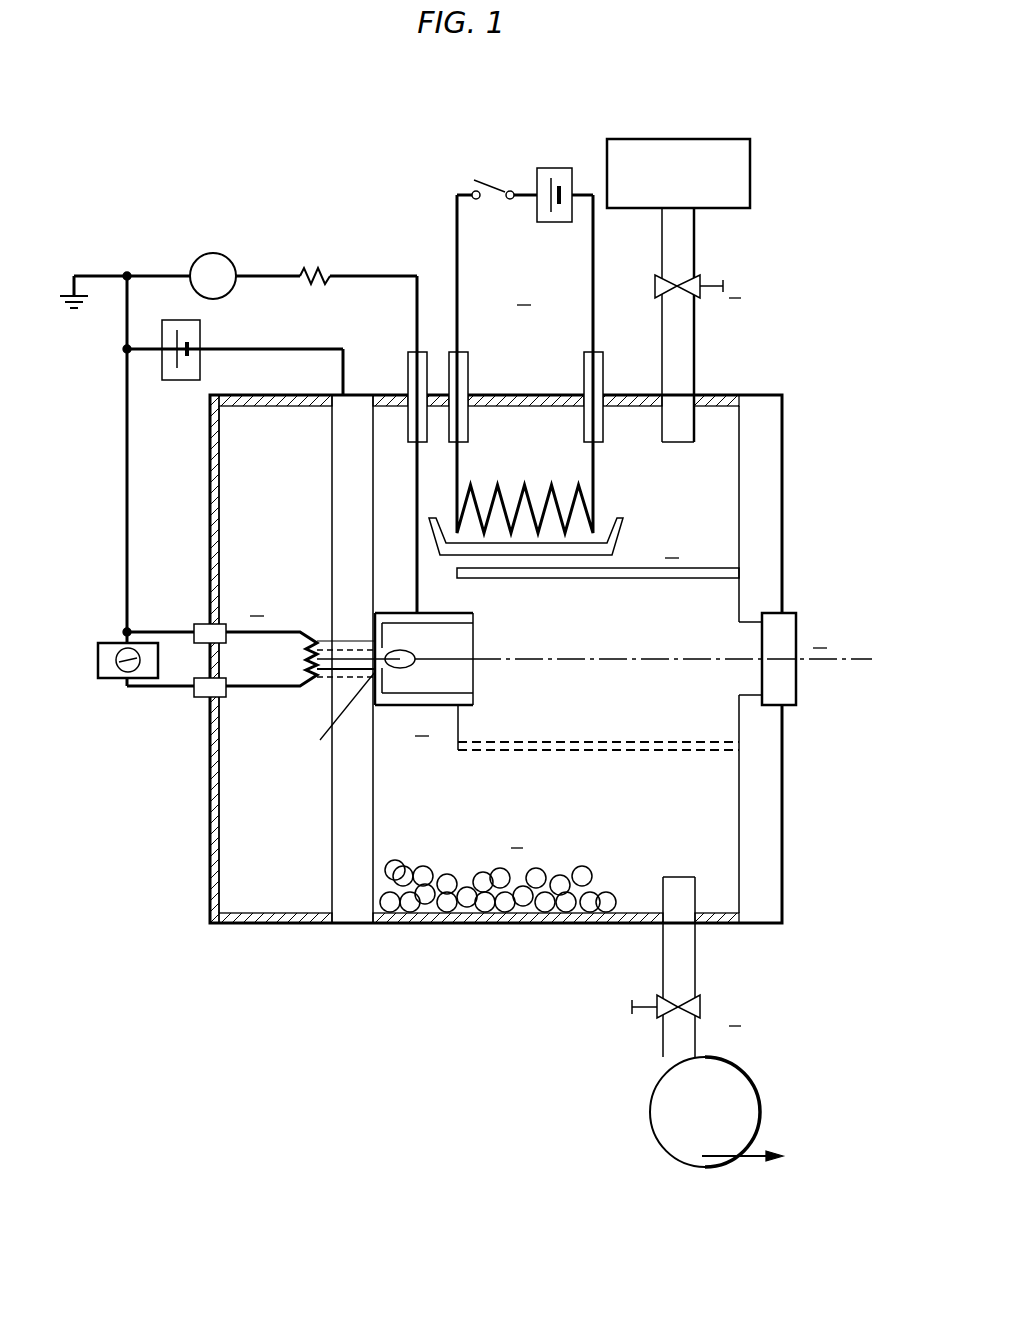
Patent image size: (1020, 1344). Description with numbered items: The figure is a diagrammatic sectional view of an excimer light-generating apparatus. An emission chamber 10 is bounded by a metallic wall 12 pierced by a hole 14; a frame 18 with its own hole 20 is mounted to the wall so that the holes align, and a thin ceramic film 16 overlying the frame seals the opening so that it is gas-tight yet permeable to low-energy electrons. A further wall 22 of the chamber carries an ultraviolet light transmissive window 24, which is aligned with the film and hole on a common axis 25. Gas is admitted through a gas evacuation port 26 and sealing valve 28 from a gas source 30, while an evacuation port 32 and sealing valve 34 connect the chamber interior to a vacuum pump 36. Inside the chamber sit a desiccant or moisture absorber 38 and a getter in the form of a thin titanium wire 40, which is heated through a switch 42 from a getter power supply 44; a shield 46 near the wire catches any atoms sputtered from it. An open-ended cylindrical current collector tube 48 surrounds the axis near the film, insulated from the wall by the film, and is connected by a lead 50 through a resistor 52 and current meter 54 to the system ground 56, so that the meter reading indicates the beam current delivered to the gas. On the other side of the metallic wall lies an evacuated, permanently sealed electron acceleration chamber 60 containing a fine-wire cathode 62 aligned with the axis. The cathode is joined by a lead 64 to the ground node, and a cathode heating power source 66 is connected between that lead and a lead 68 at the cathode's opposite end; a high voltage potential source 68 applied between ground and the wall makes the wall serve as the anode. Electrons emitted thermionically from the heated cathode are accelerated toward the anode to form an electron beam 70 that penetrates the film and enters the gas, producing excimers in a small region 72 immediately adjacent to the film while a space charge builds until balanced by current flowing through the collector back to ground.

The emission chamber 10 is at (797, 862).
The metallic wall 12 is at (332, 876).
The hole 14 is at (375, 646).
The ceramic film 16 is at (390, 620).
The frame 18 is at (378, 707).
The hole 20 is at (337, 730).
The further wall 22 is at (782, 818).
The ultraviolet light transmissive window 24 is at (790, 613).
The common axis 25 is at (843, 658).
The gas evacuation port 26 is at (675, 395).
The sealing valve 28 is at (707, 286).
The gas source 30 is at (750, 183).
The evacuation port 32 is at (663, 947).
The sealing valve 34 is at (640, 1010).
The vacuum pump 36 is at (740, 1088).
The desiccant or moisture absorber 38 is at (467, 897).
The getter wire 40 is at (593, 485).
The switch 42 is at (493, 185).
The getter power supply 44 is at (549, 168).
The shield 46 is at (717, 568).
The current collector tube 48 is at (468, 613).
The lead 50 is at (417, 503).
The resistor 52 is at (316, 268).
The current meter 54 is at (210, 253).
The system ground 56 is at (127, 276).
The electron acceleration chamber 60 is at (196, 871).
The cathode 62 is at (300, 672).
The lead 64 is at (168, 625).
The cathode heating power source 66 is at (98, 660).
The high voltage potential source 68 is at (190, 380).
The electron beam 70 is at (375, 650).
The excimer formation region 72 is at (397, 668).